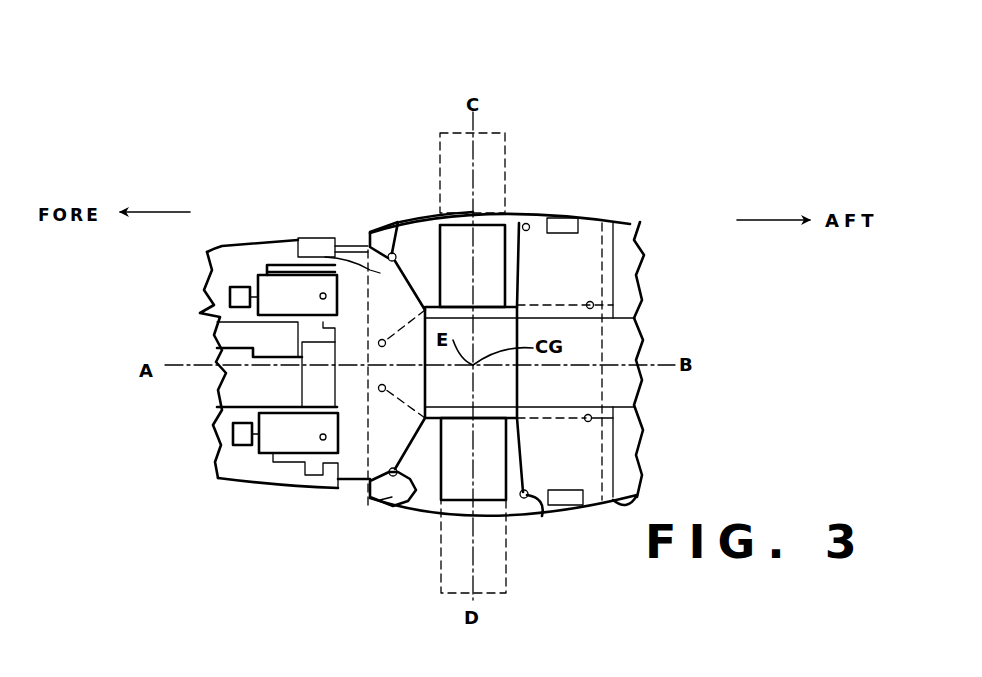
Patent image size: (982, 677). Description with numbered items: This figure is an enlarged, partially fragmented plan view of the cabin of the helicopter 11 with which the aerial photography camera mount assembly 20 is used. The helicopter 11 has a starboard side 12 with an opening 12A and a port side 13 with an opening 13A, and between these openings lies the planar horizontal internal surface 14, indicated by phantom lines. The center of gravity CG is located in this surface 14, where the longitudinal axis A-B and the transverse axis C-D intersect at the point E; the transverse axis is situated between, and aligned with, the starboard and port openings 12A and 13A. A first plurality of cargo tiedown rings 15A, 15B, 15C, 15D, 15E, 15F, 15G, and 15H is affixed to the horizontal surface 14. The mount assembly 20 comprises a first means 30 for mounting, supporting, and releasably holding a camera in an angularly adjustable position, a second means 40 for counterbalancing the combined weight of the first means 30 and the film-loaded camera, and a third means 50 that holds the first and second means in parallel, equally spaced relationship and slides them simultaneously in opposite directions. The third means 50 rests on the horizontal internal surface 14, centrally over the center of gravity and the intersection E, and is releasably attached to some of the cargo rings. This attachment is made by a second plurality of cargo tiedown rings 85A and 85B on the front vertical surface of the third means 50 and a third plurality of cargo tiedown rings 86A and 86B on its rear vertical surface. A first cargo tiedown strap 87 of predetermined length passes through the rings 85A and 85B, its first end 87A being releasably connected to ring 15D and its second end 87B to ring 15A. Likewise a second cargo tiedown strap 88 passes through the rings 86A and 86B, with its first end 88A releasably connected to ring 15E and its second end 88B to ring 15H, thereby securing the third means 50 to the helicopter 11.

The helicopter 11 is at (750, 184).
The starboard side 12 is at (510, 205).
The starboard side opening 12A is at (440, 215).
The port side 13 is at (637, 495).
The port side opening 13A is at (455, 518).
The planar horizontal internal surface 14 is at (312, 248).
The cargo tiedown ring 15A is at (370, 488).
The cargo tiedown ring 15B is at (382, 391).
The cargo tiedown ring 15C is at (382, 341).
The cargo tiedown ring 15D is at (370, 242).
The cargo tiedown ring 15E is at (529, 224).
The cargo tiedown ring 15F is at (593, 303).
The cargo tiedown ring 15G is at (592, 418).
The cargo tiedown ring 15H is at (523, 498).
The aerial photography camera mount assembly 20 is at (421, 223).
The first means 30 is at (488, 474).
The second means 40 is at (484, 248).
The third means 50 is at (497, 375).
The cargo tiedown ring 85A is at (403, 306).
The cargo tiedown ring 85B is at (463, 388).
The cargo tiedown ring 86A is at (517, 303).
The cargo tiedown ring 86B is at (518, 420).
The first cargo tiedown strap 87 is at (432, 256).
The first end of first cargo tiedown strap 87A is at (398, 245).
The second end of first cargo tiedown strap 87B is at (400, 507).
The second cargo tiedown strap 88 is at (517, 270).
The first end of second cargo tiedown strap 88A is at (530, 222).
The second end of second cargo tiedown strap 88B is at (545, 517).